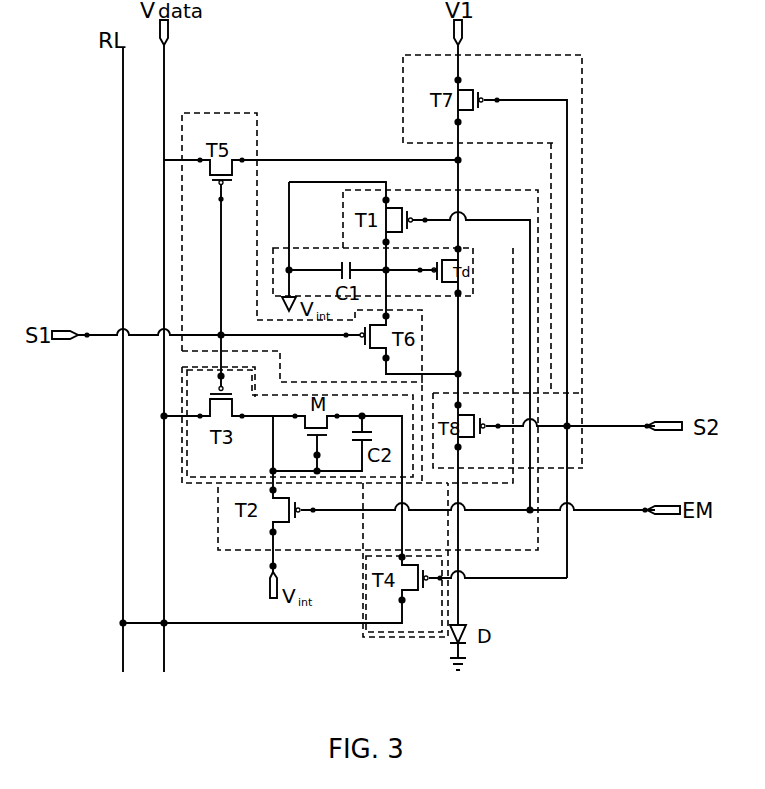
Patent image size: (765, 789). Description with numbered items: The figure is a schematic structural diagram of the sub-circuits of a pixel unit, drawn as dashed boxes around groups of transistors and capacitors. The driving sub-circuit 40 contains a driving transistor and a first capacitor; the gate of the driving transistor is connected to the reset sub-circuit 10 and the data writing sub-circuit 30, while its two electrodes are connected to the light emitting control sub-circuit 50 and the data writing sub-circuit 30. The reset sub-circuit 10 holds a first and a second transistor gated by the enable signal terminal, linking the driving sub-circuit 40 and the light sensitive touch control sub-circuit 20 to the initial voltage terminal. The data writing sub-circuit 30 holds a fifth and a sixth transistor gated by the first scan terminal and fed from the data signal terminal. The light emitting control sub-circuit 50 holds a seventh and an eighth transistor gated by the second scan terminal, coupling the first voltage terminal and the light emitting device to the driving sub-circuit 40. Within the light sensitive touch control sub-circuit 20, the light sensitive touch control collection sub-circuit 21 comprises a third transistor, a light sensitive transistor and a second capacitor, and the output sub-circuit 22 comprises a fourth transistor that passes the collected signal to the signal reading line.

The reset sub-circuit 10 is at (520, 204).
The light sensitive touch control sub-circuit 20 is at (184, 393).
The light sensitive touch control collection sub-circuit 21 is at (184, 462).
The output sub-circuit 22 is at (413, 628).
The data writing sub-circuit 30 is at (225, 113).
The driving sub-circuit 40 is at (277, 247).
The light emitting control sub-circuit 50 is at (557, 75).